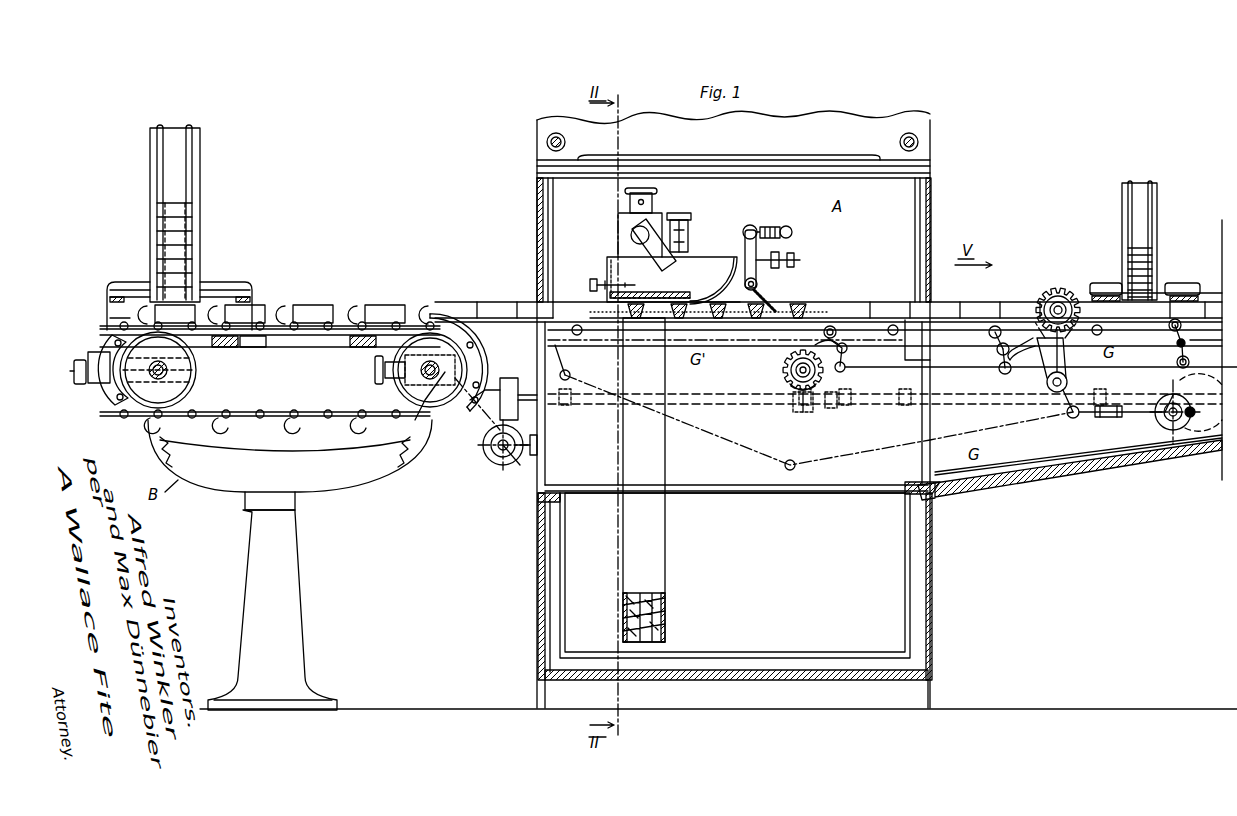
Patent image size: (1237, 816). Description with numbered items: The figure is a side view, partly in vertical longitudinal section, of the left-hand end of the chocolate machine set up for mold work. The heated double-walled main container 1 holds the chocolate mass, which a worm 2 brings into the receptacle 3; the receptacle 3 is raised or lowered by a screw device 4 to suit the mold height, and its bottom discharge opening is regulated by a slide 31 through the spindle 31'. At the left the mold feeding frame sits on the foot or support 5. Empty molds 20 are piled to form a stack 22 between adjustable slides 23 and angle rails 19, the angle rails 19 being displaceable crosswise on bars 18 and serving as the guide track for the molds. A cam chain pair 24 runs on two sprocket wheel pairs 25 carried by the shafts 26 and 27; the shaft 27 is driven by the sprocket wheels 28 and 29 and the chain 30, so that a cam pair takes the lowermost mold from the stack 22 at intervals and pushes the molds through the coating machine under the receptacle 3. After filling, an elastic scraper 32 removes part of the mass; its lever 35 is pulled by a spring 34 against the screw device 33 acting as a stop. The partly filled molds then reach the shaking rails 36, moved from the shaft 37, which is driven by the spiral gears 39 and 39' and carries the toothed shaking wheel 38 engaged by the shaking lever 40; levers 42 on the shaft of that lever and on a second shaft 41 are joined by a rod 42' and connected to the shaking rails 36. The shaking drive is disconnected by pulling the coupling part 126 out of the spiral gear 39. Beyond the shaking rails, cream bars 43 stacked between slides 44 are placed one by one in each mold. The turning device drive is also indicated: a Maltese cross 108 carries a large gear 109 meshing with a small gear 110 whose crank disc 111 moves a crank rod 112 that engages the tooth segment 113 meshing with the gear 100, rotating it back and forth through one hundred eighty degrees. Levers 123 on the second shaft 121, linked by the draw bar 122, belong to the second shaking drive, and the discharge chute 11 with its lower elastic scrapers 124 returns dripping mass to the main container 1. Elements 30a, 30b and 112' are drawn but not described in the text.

The main container 1 is at (562, 572).
The worm 2 is at (620, 232).
The receptacle 3 is at (622, 262).
The screw device 4 is at (681, 214).
The foot or support 5 is at (292, 585).
The discharge chute 11 is at (1072, 452).
The bars 18 is at (577, 336).
The angle rails 19 is at (150, 300).
The molds 20 is at (352, 305).
The stack 22 is at (162, 225).
The adjustable slides 23 is at (190, 130).
The cam chain pair 24 is at (288, 400).
The sprocket wheel pairs 25 is at (205, 388).
The shaft 26 is at (170, 372).
The shaft 27 is at (472, 348).
The sprocket wheel 28 is at (495, 462).
The sprocket wheel 29 is at (420, 412).
The chain 30 is at (470, 422).
The slide block 30a is at (510, 378).
The crank pin 30b is at (510, 468).
The slide 31 is at (651, 286).
The spindle 31' is at (600, 274).
The scraper 32 is at (765, 298).
The screw device 33 is at (796, 262).
The spring 34 is at (776, 228).
The lever 35 is at (745, 245).
The shaking rails 36 is at (920, 345).
The shaft 37 is at (790, 368).
The toothed shaking wheel 38 is at (797, 362).
The spiral gear 39 is at (788, 391).
The spiral gear 39' is at (806, 415).
The shaking lever 40 is at (815, 345).
The second shaft 41 is at (990, 345).
The levers 42 is at (918, 351).
The rod 42' is at (1041, 378).
The cream bars 43 is at (1128, 258).
The slides 44 is at (1150, 185).
The gear 100 is at (1058, 290).
The Maltese cross 108 is at (1200, 440).
The large gear 109 is at (1178, 395).
The small gear 110 is at (1189, 420).
The crank disc 111 is at (1168, 435).
The crank rod 112 is at (1116, 421).
The rod coupling 112' is at (1111, 421).
The tooth segment 113 is at (1045, 375).
The second shaft 121 is at (1178, 345).
The draw bar 122 is at (1207, 329).
The levers 123 is at (1178, 362).
The lower elastic scrapers 124 is at (1169, 325).
The coupling part 126 is at (834, 409).